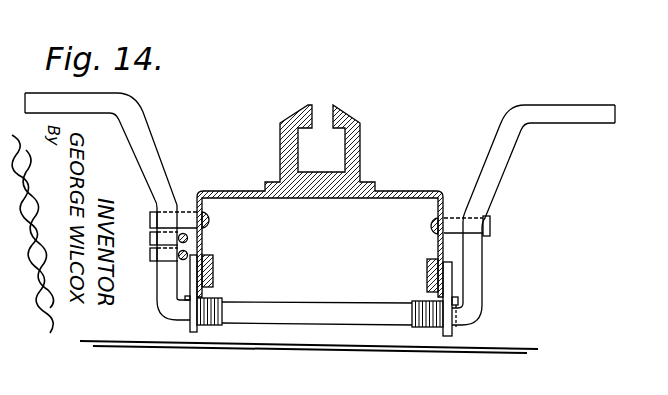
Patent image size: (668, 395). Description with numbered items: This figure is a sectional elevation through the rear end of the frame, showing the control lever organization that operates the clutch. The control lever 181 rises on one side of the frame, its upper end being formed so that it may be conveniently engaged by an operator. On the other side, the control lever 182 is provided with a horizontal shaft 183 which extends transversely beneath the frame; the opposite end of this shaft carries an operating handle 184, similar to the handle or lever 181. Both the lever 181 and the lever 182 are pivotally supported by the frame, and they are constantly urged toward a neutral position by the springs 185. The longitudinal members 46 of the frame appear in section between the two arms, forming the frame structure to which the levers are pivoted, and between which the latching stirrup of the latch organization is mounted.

The control lever 181 is at (138, 133).
The operating handle 184 is at (510, 148).
The control lever 182 is at (165, 277).
The longitudinal members 46 is at (203, 242).
The horizontal shaft 183 is at (312, 312).
The springs 185 is at (223, 323).